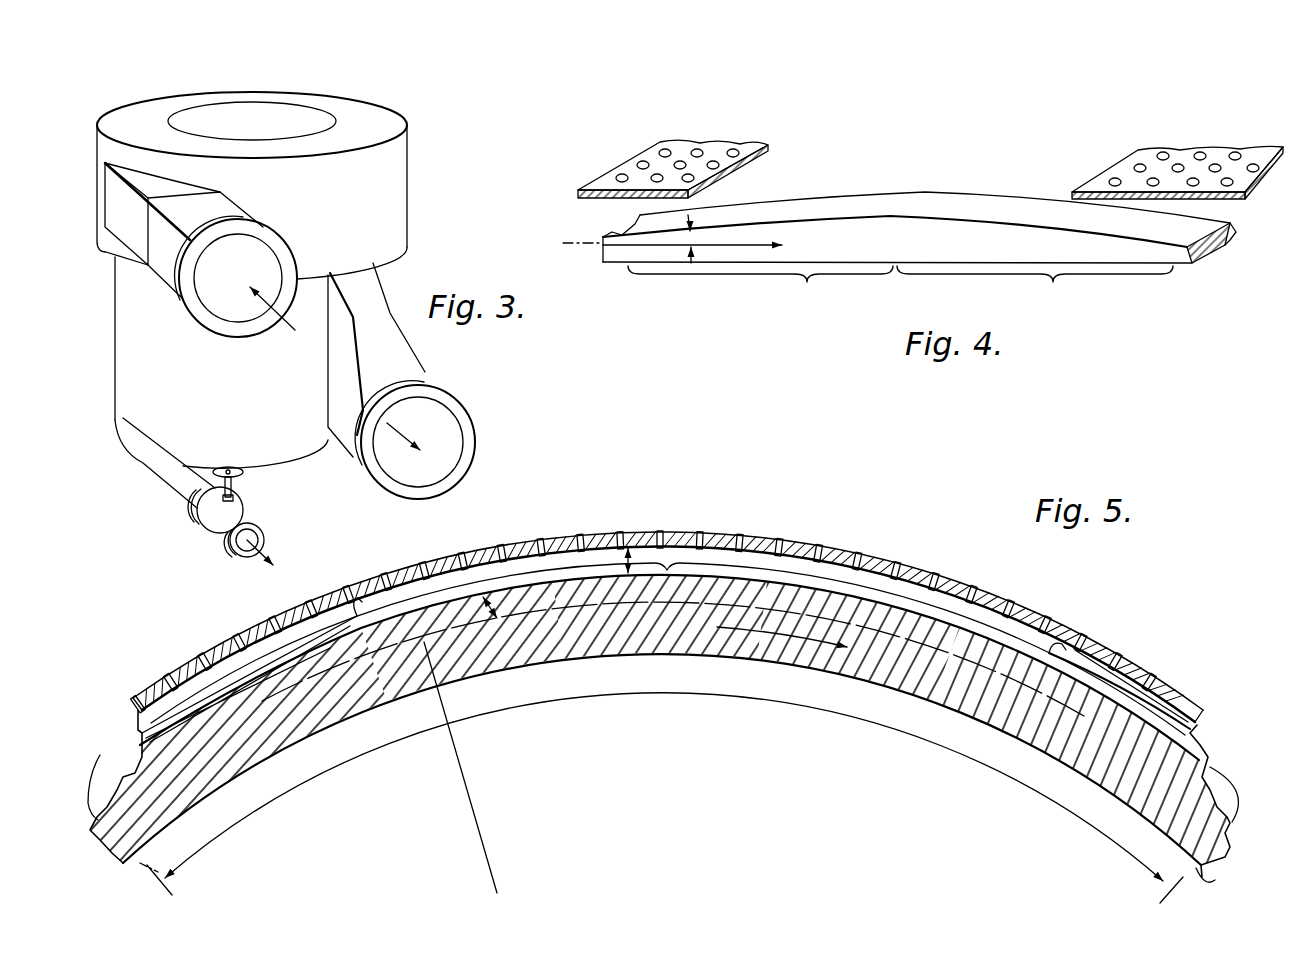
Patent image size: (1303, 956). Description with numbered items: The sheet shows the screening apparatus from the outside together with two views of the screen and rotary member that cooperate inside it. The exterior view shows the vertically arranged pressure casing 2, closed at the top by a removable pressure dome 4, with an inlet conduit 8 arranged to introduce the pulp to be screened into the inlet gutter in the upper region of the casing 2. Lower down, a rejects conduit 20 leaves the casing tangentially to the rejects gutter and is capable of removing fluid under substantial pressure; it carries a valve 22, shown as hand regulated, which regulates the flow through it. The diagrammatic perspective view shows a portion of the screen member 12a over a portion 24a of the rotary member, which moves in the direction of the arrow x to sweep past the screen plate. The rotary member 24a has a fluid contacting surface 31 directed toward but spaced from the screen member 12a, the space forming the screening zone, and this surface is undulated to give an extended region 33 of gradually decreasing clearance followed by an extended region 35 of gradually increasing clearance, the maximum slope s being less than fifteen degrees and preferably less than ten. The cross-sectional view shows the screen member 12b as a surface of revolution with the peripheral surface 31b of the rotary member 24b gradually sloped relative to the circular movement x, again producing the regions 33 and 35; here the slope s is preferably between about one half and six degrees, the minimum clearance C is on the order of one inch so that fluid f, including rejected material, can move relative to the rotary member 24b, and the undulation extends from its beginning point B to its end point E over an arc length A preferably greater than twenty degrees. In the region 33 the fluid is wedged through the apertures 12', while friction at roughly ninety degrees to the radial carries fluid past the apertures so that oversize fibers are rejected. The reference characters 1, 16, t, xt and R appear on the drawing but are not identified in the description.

In FIG. 3, the dial indicator 1 is at (235, 273).
In FIG. 3, the pressure casing 2 is at (120, 318).
In FIG. 3, the pressure dome 4 is at (323, 130).
In FIG. 3, the inlet conduit 8 is at (170, 278).
In FIG. 3, the second gauge 16 is at (420, 373).
In FIG. 3, the rejects conduit 20 is at (162, 455).
In FIG. 3, the valve 22 is at (195, 522).
In FIG. 4, the screen member 12a is at (730, 178).
In FIG. 4, the rotary member 24a is at (960, 238).
In FIG. 4, the fluid contacting surface 31 is at (885, 200).
In FIG. 4, the region of gradually decreasing clearance 33 is at (1035, 289).
In FIG. 5, the region of gradually decreasing clearance 33 is at (1060, 632).
In FIG. 4, the region of gradually increasing clearance 35 is at (760, 289).
In FIG. 5, the region of gradually increasing clearance 35 is at (358, 597).
In FIG. 5, the apertures 12' is at (666, 615).
In FIG. 5, the screen member 12b is at (1140, 682).
In FIG. 5, the rotary member 24b is at (975, 735).
In FIG. 5, the peripheral surface 31b is at (925, 625).
In FIG. 4, the maximum slope s is at (688, 237).
In FIG. 5, the maximum slope s is at (497, 620).
In FIG. 4, the direction of movement x is at (757, 248).
In FIG. 5, the direction of movement x is at (793, 640).
In FIG. 5, the thickness t is at (470, 553).
In FIG. 5, the taper dimension xt is at (485, 598).
In FIG. 5, the minimum clearance C is at (626, 548).
In FIG. 5, the fluid f is at (672, 560).
In FIG. 5, the arc length A is at (665, 790).
In FIG. 5, the radius R is at (464, 767).
In FIG. 5, the end point E is at (140, 730).
In FIG. 5, the beginning point B is at (1237, 874).